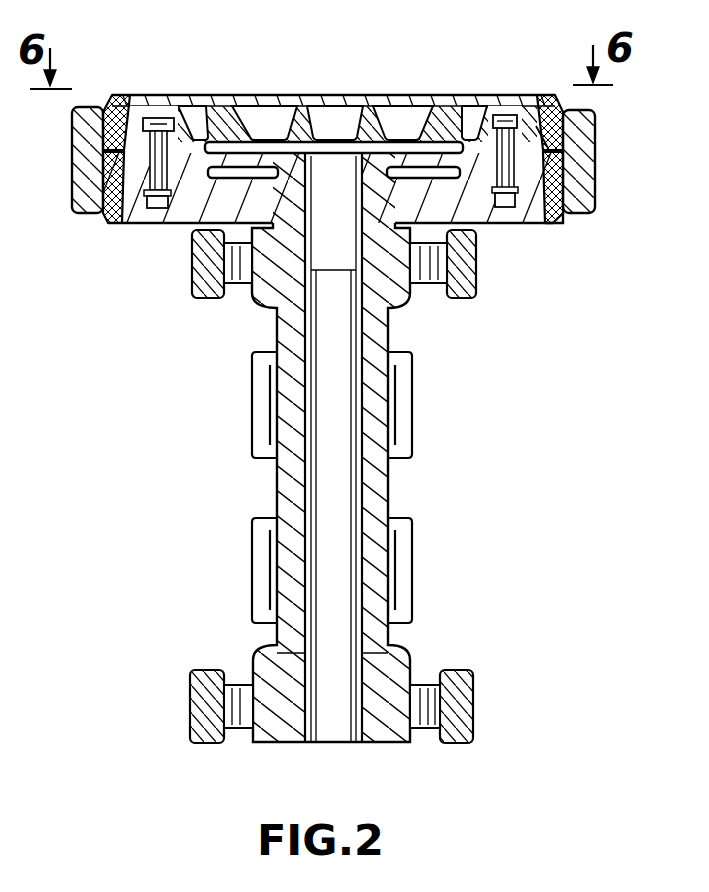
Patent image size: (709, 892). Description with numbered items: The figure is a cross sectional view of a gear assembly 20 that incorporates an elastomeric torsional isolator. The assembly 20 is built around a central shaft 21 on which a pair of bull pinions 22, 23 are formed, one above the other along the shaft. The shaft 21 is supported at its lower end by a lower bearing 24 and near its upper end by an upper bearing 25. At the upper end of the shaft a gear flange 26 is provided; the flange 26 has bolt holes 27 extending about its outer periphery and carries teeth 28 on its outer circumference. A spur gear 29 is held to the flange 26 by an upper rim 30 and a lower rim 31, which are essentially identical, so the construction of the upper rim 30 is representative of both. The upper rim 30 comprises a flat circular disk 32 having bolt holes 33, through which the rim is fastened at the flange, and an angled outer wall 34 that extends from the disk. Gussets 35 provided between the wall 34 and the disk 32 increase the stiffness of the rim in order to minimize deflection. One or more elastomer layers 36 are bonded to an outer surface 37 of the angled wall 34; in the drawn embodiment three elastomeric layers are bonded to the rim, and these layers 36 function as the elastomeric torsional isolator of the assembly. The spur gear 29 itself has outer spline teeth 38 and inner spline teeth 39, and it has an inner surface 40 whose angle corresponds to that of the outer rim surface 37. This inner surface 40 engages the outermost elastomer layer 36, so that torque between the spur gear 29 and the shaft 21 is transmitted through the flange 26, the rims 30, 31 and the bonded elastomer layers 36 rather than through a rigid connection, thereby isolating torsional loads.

The gear assembly 20 is at (483, 367).
The central shaft 21 is at (374, 491).
The bull pinion 22 is at (410, 414).
The bull pinion 23 is at (404, 558).
The lower bearing 24 is at (470, 701).
The upper bearing 25 is at (478, 268).
The gear flange 26 is at (445, 140).
The bolt holes 27 is at (548, 160).
The teeth 28 is at (550, 165).
The spur gear 29 is at (572, 212).
The upper rim 30 is at (205, 103).
The lower rim 31 is at (190, 212).
The flat circular disk 32 is at (503, 140).
The bolt holes 33 is at (552, 104).
The angled outer wall 34 is at (572, 124).
The gussets 35 is at (312, 105).
The elastomer layers 36 is at (112, 133).
The outer surface 37 is at (100, 110).
The outer spline teeth 38 is at (588, 205).
The inner spline teeth 39 is at (112, 163).
The inner surface 40 is at (550, 137).